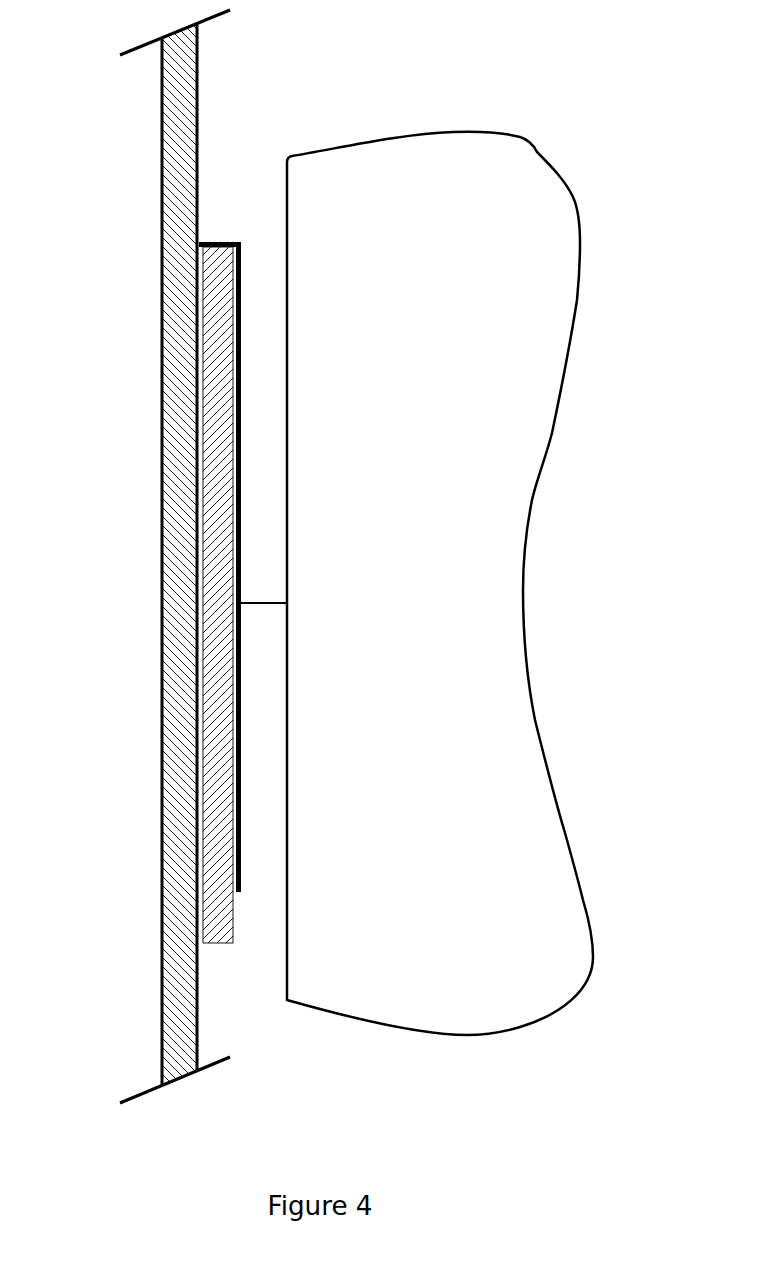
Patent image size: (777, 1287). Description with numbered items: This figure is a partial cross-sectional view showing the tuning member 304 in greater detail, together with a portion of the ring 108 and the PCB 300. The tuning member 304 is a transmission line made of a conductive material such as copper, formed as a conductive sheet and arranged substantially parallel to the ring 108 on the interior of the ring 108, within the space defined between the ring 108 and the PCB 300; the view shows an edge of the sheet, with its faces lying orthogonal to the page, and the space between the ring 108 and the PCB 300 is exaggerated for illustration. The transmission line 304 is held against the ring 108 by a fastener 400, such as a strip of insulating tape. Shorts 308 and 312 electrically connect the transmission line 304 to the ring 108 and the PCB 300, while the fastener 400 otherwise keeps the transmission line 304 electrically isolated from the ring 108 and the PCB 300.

The ring 108 is at (173, 212).
The PCB 300 is at (440, 583).
The tuning member 304 is at (258, 730).
The short 308 is at (215, 238).
The short 312 is at (263, 603).
The fastener 400 is at (218, 785).